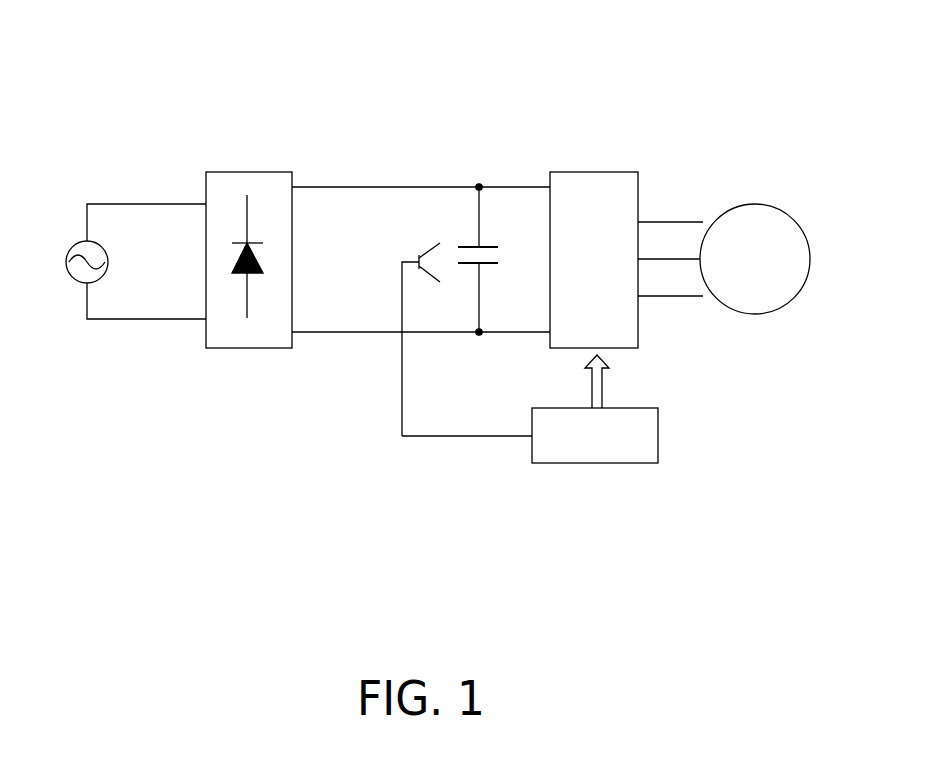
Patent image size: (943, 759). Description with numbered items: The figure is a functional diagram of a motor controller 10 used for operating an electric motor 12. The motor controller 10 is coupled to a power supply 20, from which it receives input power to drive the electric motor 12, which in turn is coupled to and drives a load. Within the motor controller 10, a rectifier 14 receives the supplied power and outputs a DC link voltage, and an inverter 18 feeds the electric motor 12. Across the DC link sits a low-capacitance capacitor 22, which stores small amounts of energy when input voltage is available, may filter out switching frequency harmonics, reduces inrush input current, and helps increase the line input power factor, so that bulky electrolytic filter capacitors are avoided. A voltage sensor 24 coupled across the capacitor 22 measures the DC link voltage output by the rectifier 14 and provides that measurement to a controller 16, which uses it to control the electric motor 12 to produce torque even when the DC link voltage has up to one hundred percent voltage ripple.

The motor controller 10 is at (142, 53).
The electric motor 12 is at (785, 205).
The rectifier 14 is at (246, 172).
The controller 16 is at (588, 463).
The inverter 18 is at (608, 172).
The power supply 20 is at (72, 242).
The low-capacitance capacitor 22 is at (485, 247).
The voltage sensor 24 is at (433, 247).